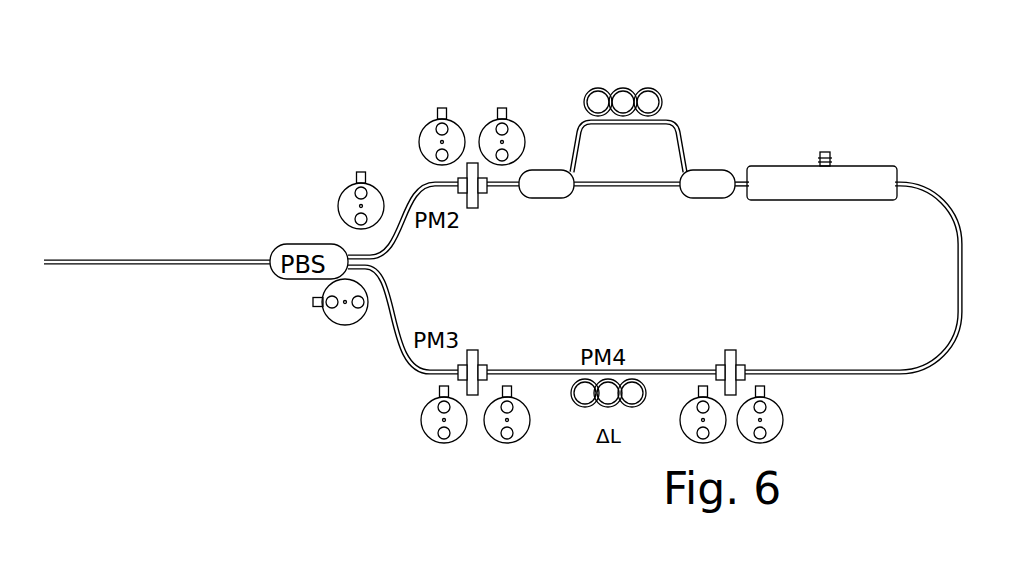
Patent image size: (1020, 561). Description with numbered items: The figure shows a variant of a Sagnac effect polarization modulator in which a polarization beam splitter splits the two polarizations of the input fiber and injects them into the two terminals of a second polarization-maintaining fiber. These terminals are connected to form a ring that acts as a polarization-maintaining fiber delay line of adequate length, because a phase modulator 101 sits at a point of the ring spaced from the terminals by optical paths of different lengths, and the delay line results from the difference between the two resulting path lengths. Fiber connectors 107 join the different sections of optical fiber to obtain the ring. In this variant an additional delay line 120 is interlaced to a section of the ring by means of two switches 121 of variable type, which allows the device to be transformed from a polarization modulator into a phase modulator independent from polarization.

The phase modulator 101 is at (783, 165).
The fiber connectors 107 is at (469, 162).
The additional delay line 120 is at (676, 120).
The switches 121 is at (541, 182).